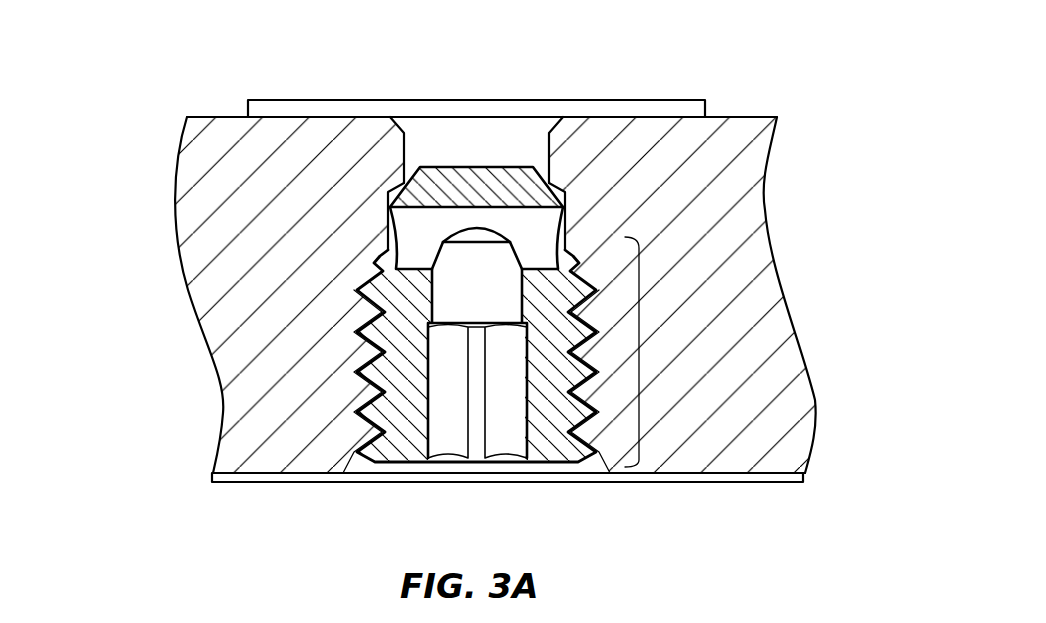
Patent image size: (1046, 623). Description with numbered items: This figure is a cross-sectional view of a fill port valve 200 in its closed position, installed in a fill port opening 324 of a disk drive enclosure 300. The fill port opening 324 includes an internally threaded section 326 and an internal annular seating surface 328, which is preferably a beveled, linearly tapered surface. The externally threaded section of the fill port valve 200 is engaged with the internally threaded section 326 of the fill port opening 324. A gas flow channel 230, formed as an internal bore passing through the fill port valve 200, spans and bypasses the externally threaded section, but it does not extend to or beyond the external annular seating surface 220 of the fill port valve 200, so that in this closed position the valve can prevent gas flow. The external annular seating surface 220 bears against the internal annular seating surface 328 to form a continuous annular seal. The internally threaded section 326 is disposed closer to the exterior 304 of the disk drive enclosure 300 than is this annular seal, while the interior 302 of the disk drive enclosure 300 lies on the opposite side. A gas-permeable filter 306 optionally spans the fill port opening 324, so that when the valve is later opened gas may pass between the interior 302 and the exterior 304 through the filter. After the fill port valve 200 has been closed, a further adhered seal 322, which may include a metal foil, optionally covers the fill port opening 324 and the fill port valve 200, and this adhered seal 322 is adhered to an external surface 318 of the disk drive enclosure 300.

The fill port valve 200 is at (397, 423).
The external annular seating surface 220 is at (478, 180).
The gas flow channel 230 is at (492, 270).
The disk drive enclosure 300 is at (203, 245).
The interior 302 is at (343, 31).
The exterior 304 is at (342, 553).
The gas-permeable filter 306 is at (282, 105).
The external surface 318 is at (717, 483).
The adhered seal 322 is at (580, 483).
The fill port opening 324 is at (512, 150).
The internally threaded section 326 is at (642, 353).
The internal annular seating surface 328 is at (552, 197).